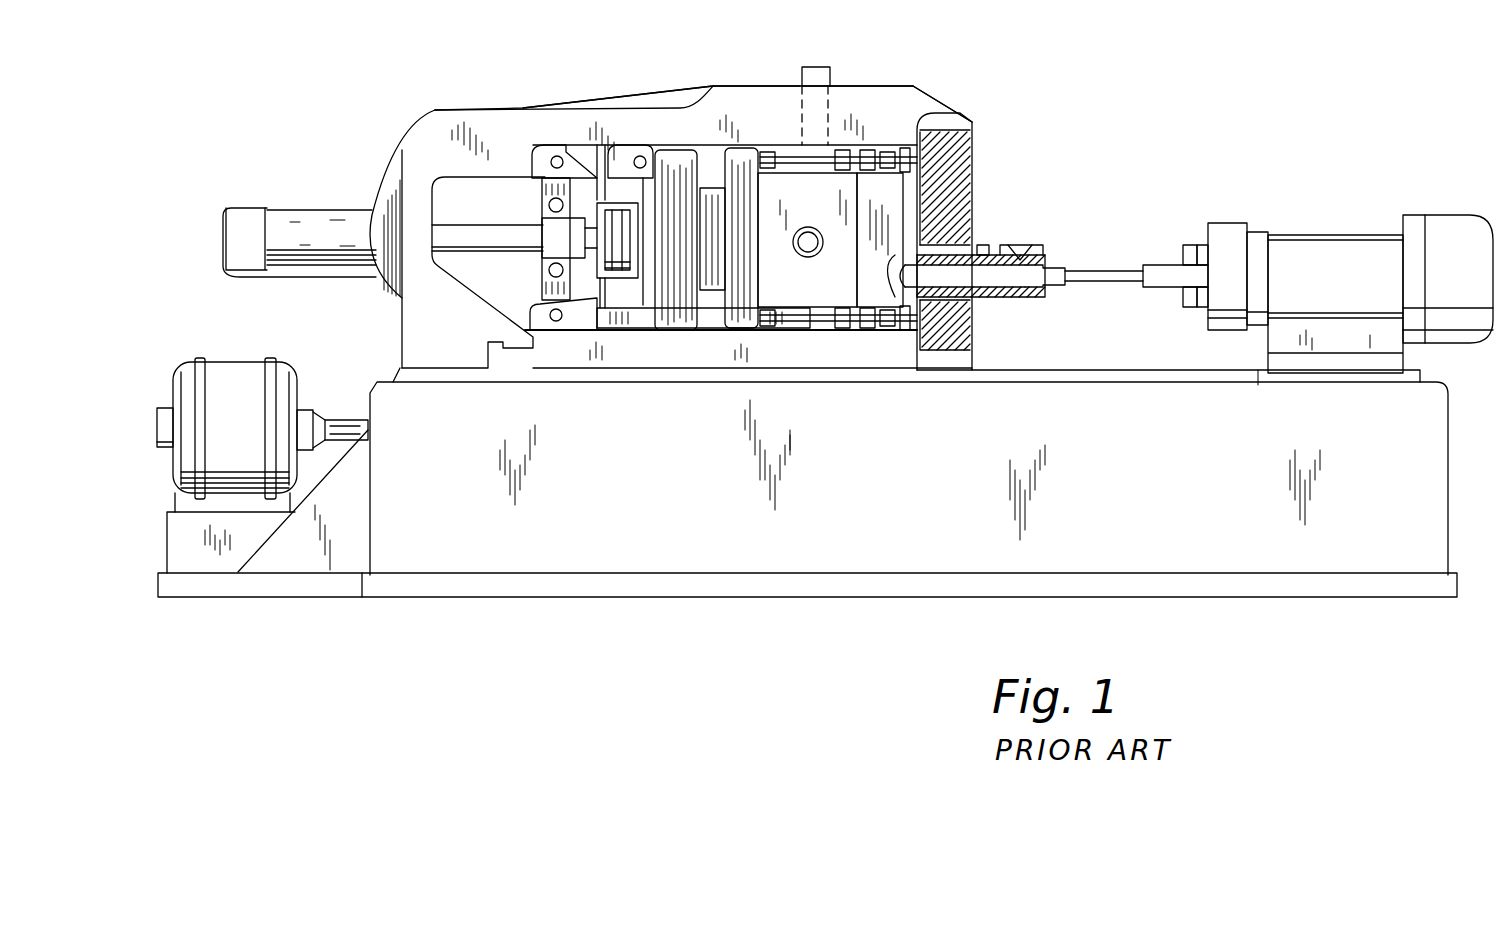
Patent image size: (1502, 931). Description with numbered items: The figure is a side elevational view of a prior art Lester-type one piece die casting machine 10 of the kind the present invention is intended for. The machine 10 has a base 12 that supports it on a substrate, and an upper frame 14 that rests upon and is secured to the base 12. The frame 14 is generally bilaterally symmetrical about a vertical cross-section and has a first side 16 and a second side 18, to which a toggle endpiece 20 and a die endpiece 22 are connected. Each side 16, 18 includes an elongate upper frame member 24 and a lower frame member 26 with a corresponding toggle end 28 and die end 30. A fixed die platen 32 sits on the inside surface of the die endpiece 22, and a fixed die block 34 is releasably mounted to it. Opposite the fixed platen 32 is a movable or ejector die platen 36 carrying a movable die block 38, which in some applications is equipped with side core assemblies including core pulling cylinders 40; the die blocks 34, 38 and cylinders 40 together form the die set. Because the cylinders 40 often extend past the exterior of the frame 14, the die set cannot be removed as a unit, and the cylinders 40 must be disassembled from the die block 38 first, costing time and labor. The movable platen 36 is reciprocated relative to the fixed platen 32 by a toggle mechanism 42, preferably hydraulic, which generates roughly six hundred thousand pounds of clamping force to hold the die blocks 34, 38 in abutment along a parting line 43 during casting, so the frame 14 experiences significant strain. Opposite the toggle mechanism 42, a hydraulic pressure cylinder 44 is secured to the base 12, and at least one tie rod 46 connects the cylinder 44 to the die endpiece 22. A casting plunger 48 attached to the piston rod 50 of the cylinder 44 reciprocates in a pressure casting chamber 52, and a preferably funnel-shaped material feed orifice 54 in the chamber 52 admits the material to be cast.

The die casting machine 10 is at (1121, 59).
The base 12 is at (622, 520).
The upper frame 14 is at (674, 62).
The first side 16 is at (262, 435).
The second side 18 is at (855, 105).
The toggle endpiece 20 is at (395, 265).
The die endpiece 22 is at (963, 175).
The upper frame member 24 is at (520, 118).
The lower frame member 26 is at (660, 355).
The toggle end 28 is at (438, 118).
The die end 30 is at (920, 98).
The fixed die platen 32 is at (940, 240).
The fixed die block 34 is at (975, 145).
The movable die platen 36 is at (735, 150).
The movable die block 38 is at (785, 185).
The core pulling cylinders 40 is at (820, 67).
The toggle mechanism 42 is at (458, 208).
The parting line 43 is at (870, 270).
The hydraulic pressure cylinder 44 is at (1350, 240).
The tie rod 46 is at (1170, 275).
The casting plunger 48 is at (1058, 285).
The piston rod 50 is at (1130, 285).
The pressure casting chamber 52 is at (1010, 290).
The material feed orifice 54 is at (1020, 245).